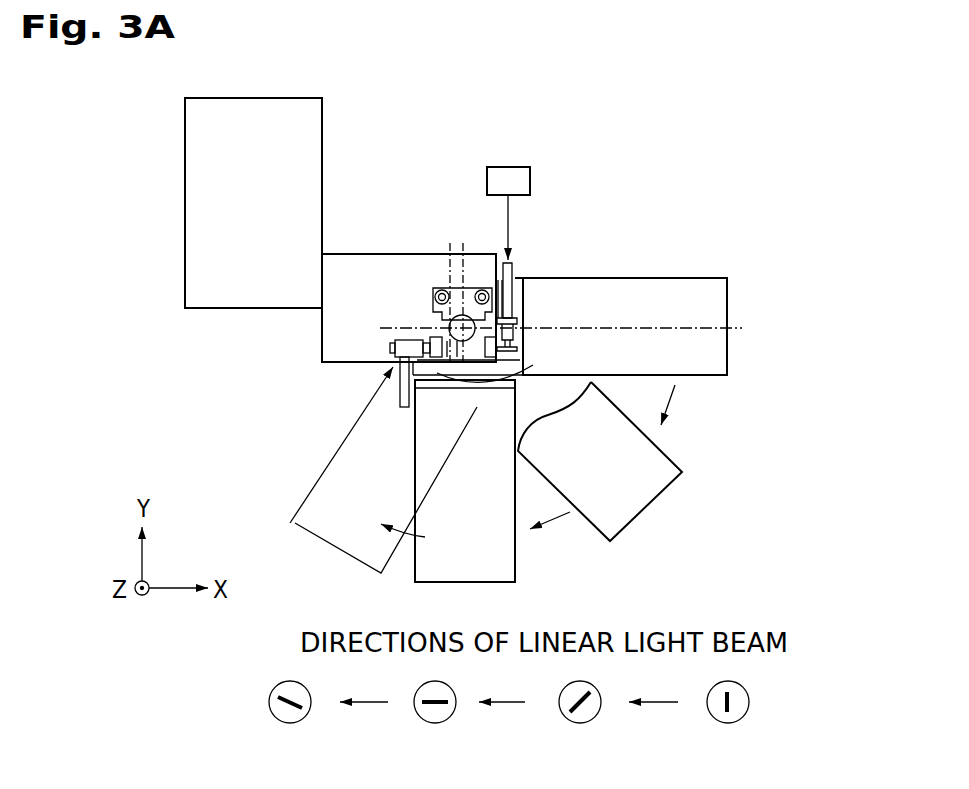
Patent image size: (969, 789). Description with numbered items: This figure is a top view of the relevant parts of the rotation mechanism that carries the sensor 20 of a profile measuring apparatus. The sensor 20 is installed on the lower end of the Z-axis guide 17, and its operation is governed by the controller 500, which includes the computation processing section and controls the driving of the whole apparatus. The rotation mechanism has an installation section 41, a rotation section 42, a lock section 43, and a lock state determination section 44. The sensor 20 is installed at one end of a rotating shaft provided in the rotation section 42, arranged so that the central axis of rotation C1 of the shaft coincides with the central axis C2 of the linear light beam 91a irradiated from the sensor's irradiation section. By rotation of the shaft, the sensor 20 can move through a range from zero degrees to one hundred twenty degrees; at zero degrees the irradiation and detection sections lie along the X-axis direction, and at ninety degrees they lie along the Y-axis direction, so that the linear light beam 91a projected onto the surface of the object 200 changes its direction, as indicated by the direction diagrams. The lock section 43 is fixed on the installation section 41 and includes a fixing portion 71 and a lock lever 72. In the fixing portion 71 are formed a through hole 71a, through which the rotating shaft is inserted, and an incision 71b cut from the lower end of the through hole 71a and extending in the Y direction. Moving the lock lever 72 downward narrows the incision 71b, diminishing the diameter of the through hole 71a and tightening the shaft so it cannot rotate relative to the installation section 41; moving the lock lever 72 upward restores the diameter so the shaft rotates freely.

The Z-axis guide 17 is at (303, 123).
The sensor 20 is at (657, 303).
The installation section 41 is at (340, 328).
The rotation section 42 is at (530, 365).
The lock section 43 is at (275, 355).
The lock state determination section 44 is at (518, 306).
The fixing portion 71 is at (449, 327).
The through hole 71a is at (478, 352).
The incision 71b is at (467, 373).
The lock lever 72 is at (393, 362).
The controller 500 is at (530, 175).
The central axis of rotation C1 is at (450, 247).
The central axis of the linear light beam C2 is at (475, 287).
The linear light beam 91a is at (292, 694).
The object 200 is at (303, 718).